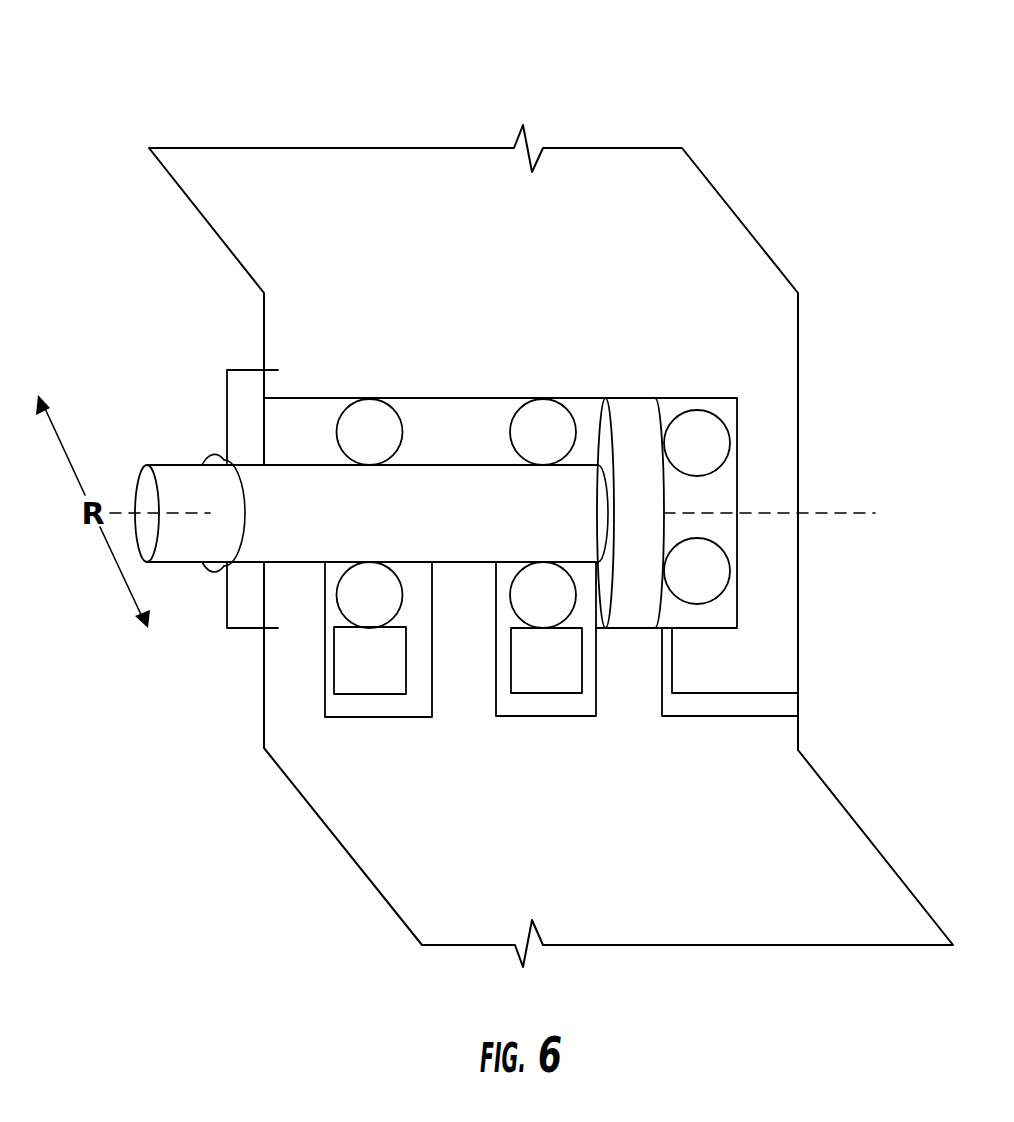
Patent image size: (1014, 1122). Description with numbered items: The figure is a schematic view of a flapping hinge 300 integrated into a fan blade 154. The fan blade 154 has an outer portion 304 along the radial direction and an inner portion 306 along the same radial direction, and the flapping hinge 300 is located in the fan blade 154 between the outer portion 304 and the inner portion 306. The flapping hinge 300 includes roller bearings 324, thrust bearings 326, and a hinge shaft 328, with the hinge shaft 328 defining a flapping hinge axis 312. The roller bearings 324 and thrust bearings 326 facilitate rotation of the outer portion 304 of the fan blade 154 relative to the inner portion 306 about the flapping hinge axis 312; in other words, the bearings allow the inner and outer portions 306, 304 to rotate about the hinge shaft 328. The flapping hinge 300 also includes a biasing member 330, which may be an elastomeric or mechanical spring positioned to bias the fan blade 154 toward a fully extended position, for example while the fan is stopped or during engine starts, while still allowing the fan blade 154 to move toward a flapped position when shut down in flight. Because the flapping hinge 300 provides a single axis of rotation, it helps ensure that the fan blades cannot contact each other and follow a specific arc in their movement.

The fan blade 154 is at (880, 92).
The flapping hinge 300 is at (770, 428).
The outer portion 304 is at (683, 210).
The inner portion 306 is at (377, 847).
The flapping hinge axis 312 is at (825, 513).
The roller bearings 324 is at (632, 413).
The thrust bearings 326 is at (515, 425).
The hinge shaft 328 is at (373, 531).
The biasing member 330 is at (227, 410).